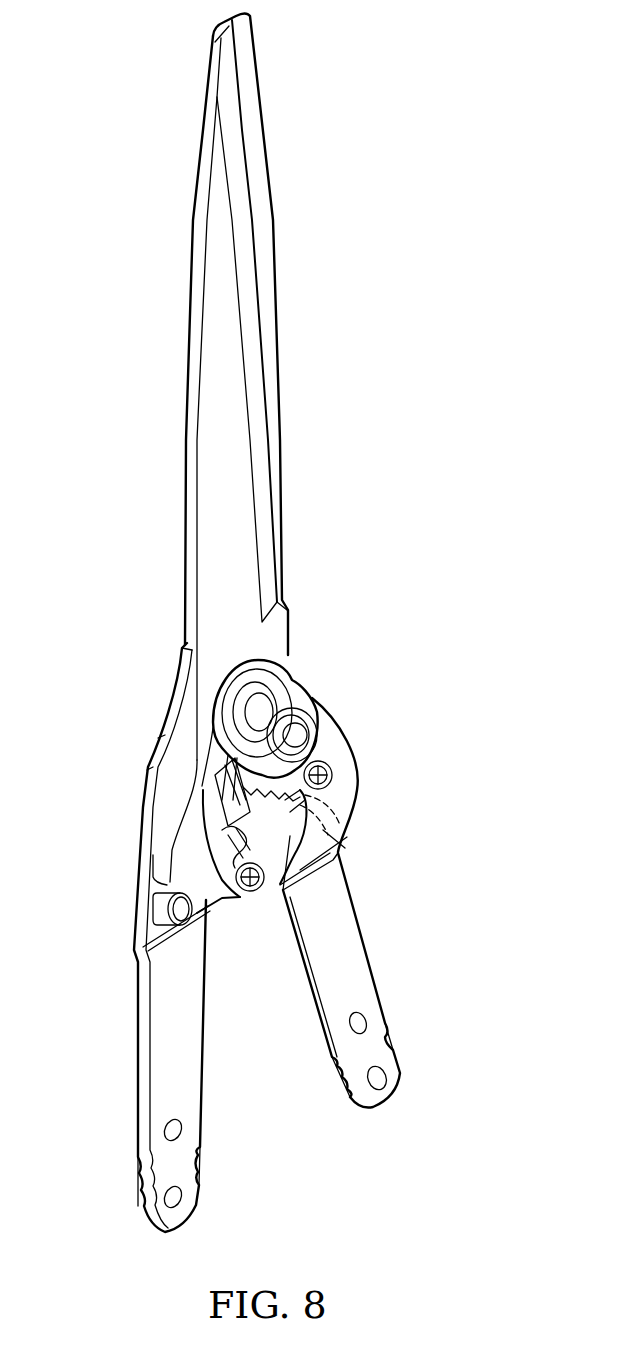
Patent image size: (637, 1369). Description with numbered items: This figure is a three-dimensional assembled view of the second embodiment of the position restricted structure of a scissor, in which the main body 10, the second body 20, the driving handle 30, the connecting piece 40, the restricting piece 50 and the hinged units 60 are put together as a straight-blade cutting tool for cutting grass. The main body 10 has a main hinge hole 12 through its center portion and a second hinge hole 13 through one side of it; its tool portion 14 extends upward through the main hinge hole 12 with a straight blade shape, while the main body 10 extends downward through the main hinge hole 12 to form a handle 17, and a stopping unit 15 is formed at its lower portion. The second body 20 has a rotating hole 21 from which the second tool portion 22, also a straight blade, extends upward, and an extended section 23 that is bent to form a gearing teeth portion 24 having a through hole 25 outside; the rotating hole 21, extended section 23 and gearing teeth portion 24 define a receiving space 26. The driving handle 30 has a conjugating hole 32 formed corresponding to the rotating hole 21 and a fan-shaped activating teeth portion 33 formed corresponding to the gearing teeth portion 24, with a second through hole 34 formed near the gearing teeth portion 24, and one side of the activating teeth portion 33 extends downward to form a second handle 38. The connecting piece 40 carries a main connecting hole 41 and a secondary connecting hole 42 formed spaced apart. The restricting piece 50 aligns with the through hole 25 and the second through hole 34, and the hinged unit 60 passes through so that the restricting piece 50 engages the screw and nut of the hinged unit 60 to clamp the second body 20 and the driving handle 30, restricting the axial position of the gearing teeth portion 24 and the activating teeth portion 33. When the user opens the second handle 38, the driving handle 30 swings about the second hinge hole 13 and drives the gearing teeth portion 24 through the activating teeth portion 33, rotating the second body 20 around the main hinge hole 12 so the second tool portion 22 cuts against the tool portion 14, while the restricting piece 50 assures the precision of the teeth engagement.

The main body 10 is at (146, 937).
The main hinge hole 12 is at (342, 665).
The second hinge hole 13 is at (393, 735).
The tool portion 14 is at (265, 210).
The stopping unit 15 is at (165, 905).
The handle 17 is at (160, 1103).
The second body 20 is at (221, 387).
The rotating hole 21 is at (342, 665).
The second tool portion 22 is at (225, 430).
The extended section 23 is at (193, 830).
The gearing teeth portion 24 is at (305, 866).
The through hole 25 is at (250, 892).
The receiving space 26 is at (225, 800).
The driving handle 30 is at (395, 903).
The conjugating hole 32 is at (393, 735).
The activating teeth portion 33 is at (237, 778).
The second through hole 34 is at (332, 768).
The second handle 38 is at (375, 1048).
The connecting piece 40 is at (303, 788).
The main connecting hole 41 is at (268, 660).
The secondary connecting hole 42 is at (315, 737).
The restricting piece 50 is at (340, 818).
The hinged unit 60 is at (317, 788).